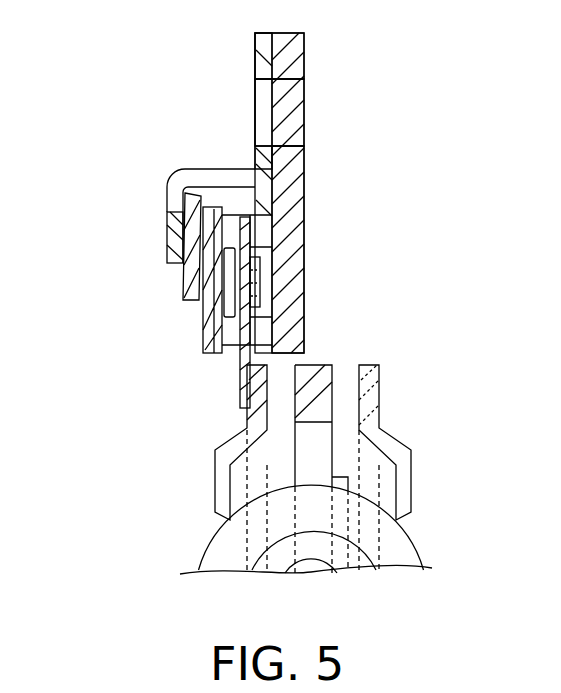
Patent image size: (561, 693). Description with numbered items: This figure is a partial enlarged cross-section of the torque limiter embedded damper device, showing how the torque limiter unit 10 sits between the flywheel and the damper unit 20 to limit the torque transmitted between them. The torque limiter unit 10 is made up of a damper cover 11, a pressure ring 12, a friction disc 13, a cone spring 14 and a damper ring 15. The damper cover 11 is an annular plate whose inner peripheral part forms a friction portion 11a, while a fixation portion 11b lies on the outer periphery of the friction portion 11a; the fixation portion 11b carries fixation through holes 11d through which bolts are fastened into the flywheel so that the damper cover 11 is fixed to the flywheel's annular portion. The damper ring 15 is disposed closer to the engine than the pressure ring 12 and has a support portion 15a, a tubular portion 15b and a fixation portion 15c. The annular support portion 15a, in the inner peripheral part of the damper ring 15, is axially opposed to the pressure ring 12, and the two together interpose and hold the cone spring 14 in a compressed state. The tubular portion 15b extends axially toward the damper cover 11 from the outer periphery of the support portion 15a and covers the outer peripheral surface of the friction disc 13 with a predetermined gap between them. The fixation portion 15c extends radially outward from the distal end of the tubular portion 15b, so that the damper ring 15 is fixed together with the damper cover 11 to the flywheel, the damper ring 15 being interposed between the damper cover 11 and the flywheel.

The torque limiter unit 10 is at (408, 157).
The damper cover 11 is at (305, 45).
The friction portion 11a is at (292, 273).
The fixation portion 11b is at (305, 60).
The fixation through holes 11d is at (288, 134).
The pressure ring 12 is at (212, 338).
The friction disc 13 is at (232, 353).
The cone spring 14 is at (183, 292).
The damper ring 15 is at (157, 247).
The support portion 15a is at (167, 230).
The tubular portion 15b is at (187, 170).
The fixation portion 15c is at (255, 35).
The damper unit 20 is at (450, 527).